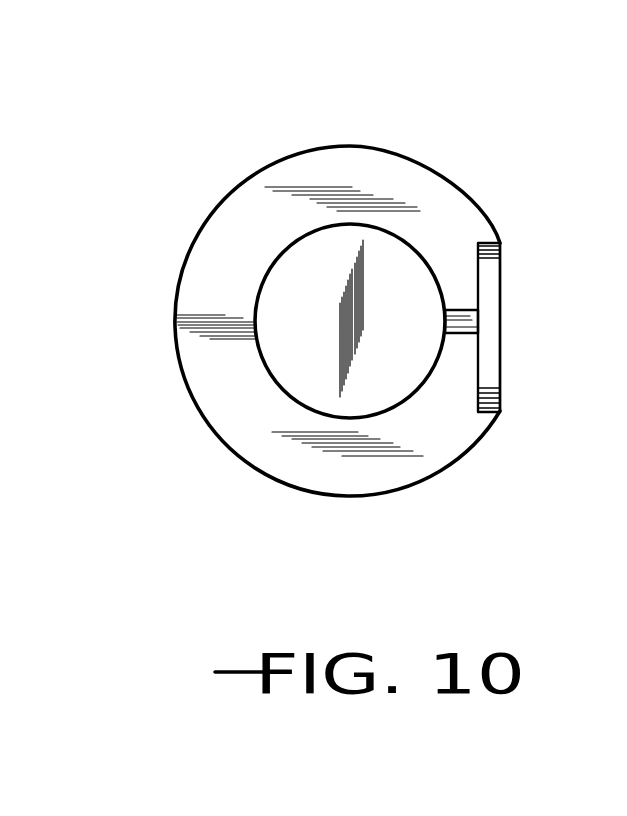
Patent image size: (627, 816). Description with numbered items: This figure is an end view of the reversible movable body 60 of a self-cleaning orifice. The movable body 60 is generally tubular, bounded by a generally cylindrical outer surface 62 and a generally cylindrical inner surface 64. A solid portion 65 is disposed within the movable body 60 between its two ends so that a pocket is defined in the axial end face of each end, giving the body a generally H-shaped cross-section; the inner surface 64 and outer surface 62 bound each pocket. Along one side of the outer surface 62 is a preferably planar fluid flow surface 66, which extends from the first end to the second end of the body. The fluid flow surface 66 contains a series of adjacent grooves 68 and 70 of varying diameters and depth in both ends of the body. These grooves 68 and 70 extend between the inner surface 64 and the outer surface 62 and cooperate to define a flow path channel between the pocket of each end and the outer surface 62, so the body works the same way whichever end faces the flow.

The movable body 60 is at (343, 317).
The outer surface 62 is at (288, 488).
The inner surface 64 is at (372, 418).
The solid portion 65 is at (295, 359).
The fluid flow surface 66 is at (500, 343).
The groove 68 is at (488, 288).
The groove 70 is at (460, 323).